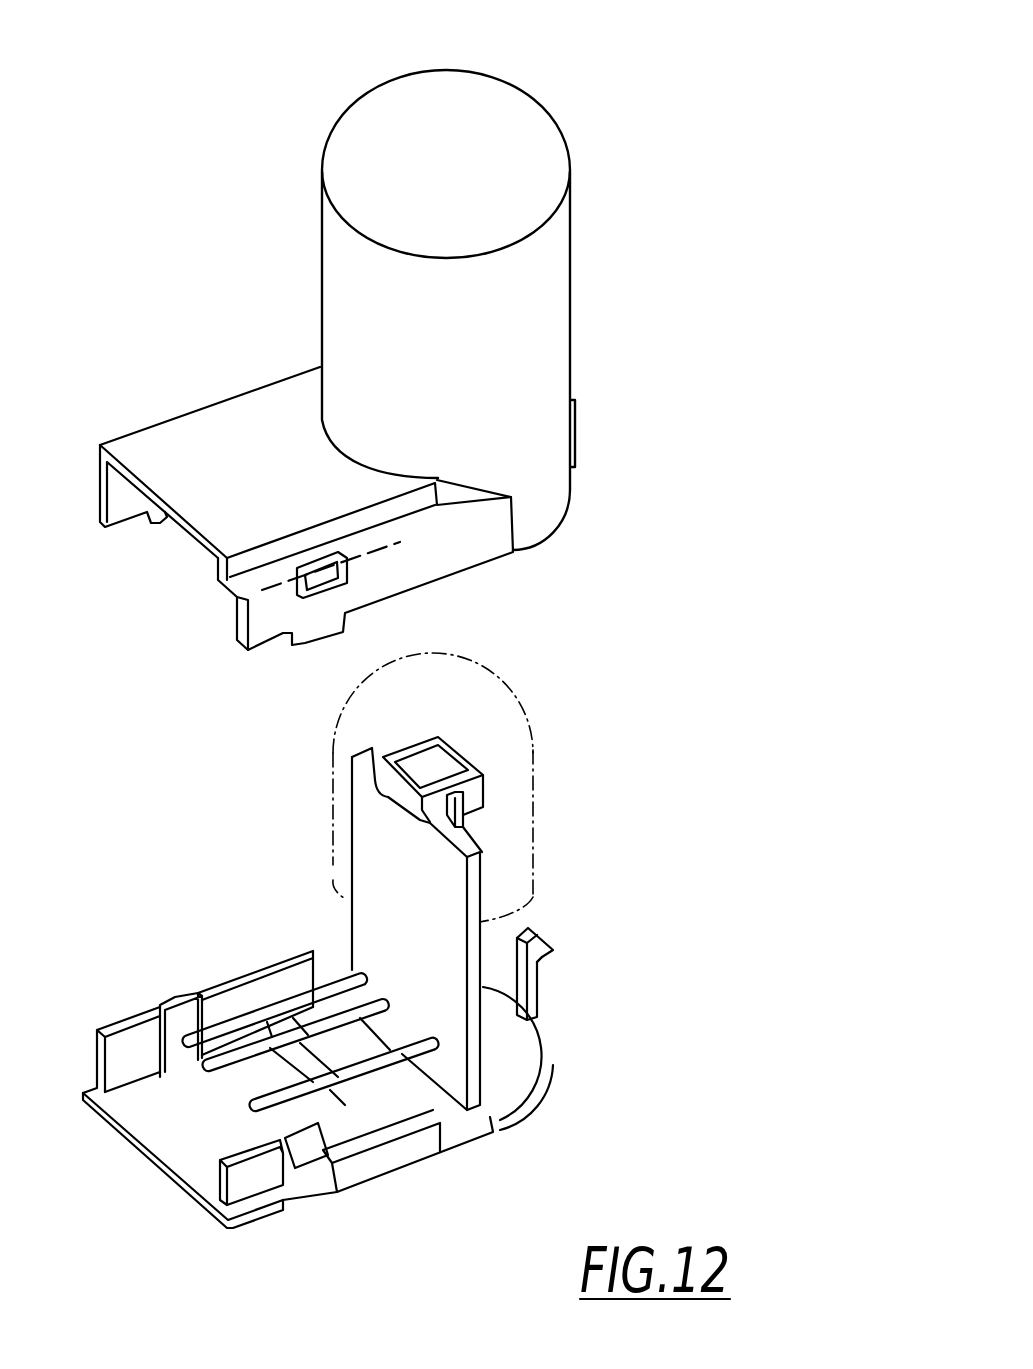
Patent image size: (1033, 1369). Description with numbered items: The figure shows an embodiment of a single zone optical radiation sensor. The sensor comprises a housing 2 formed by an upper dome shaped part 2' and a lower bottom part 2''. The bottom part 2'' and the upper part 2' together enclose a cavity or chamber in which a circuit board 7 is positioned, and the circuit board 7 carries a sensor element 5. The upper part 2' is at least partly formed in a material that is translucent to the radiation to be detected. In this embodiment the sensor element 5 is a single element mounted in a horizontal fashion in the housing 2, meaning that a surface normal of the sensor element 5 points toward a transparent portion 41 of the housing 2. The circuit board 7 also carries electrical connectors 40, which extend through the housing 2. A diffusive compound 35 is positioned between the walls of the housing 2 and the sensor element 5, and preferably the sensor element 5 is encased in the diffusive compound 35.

The housing 2 is at (429, 325).
The upper dome shaped part 2' is at (491, 310).
The lower bottom part 2'' is at (379, 1078).
The transparent portion 41 is at (505, 102).
The diffusive compound 35 is at (453, 697).
The sensor element 5 is at (470, 757).
The circuit board 7 is at (351, 923).
The electrical connectors 40 is at (173, 1002).